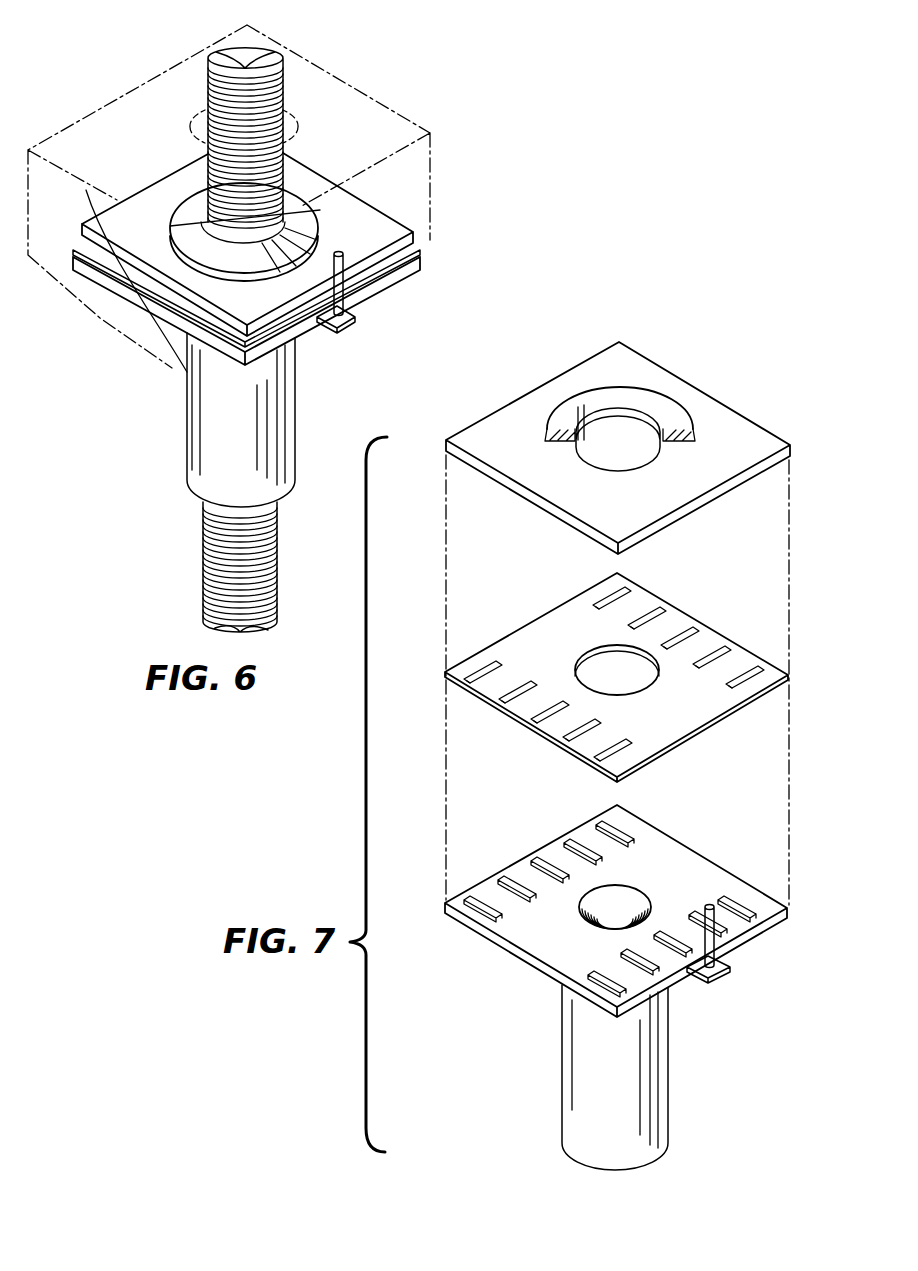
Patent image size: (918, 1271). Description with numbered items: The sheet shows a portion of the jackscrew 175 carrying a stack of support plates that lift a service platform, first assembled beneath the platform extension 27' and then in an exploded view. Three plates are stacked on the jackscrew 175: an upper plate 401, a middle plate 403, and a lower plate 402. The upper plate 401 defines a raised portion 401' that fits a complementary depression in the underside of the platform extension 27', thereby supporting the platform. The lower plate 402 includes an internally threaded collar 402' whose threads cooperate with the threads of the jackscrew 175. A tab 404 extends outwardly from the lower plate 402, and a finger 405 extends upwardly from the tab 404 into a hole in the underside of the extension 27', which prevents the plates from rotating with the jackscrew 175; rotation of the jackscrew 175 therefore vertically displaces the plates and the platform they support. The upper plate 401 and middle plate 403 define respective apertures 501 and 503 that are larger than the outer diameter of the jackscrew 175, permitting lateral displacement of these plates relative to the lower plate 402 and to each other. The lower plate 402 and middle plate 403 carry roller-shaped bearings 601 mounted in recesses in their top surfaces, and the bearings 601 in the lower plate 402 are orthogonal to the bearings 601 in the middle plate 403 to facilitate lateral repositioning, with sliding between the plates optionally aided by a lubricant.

In FIG. 6, the platform extension 27' is at (229, 195).
In FIG. 6, the jackscrew 175 is at (283, 84).
In FIG. 6, the upper plate 401 is at (254, 244).
In FIG. 7, the upper plate 401 is at (602, 448).
In FIG. 6, the raised portion 401' is at (274, 195).
In FIG. 7, the raised portion 401' is at (646, 391).
In FIG. 6, the lower plate 402 is at (278, 311).
In FIG. 7, the lower plate 402 is at (605, 911).
In FIG. 6, the internally threaded collar 402' is at (276, 420).
In FIG. 7, the internally threaded collar 402' is at (656, 1077).
In FIG. 6, the middle plate 403 is at (421, 250).
In FIG. 7, the middle plate 403 is at (650, 763).
In FIG. 6, the tab 404 is at (352, 328).
In FIG. 7, the tab 404 is at (718, 984).
In FIG. 6, the finger 405 is at (327, 279).
In FIG. 7, the finger 405 is at (716, 945).
In FIG. 7, the aperture 501 is at (583, 459).
In FIG. 7, the aperture 503 is at (577, 673).
In FIG. 7, the roller-shaped bearings 601 is at (753, 660).